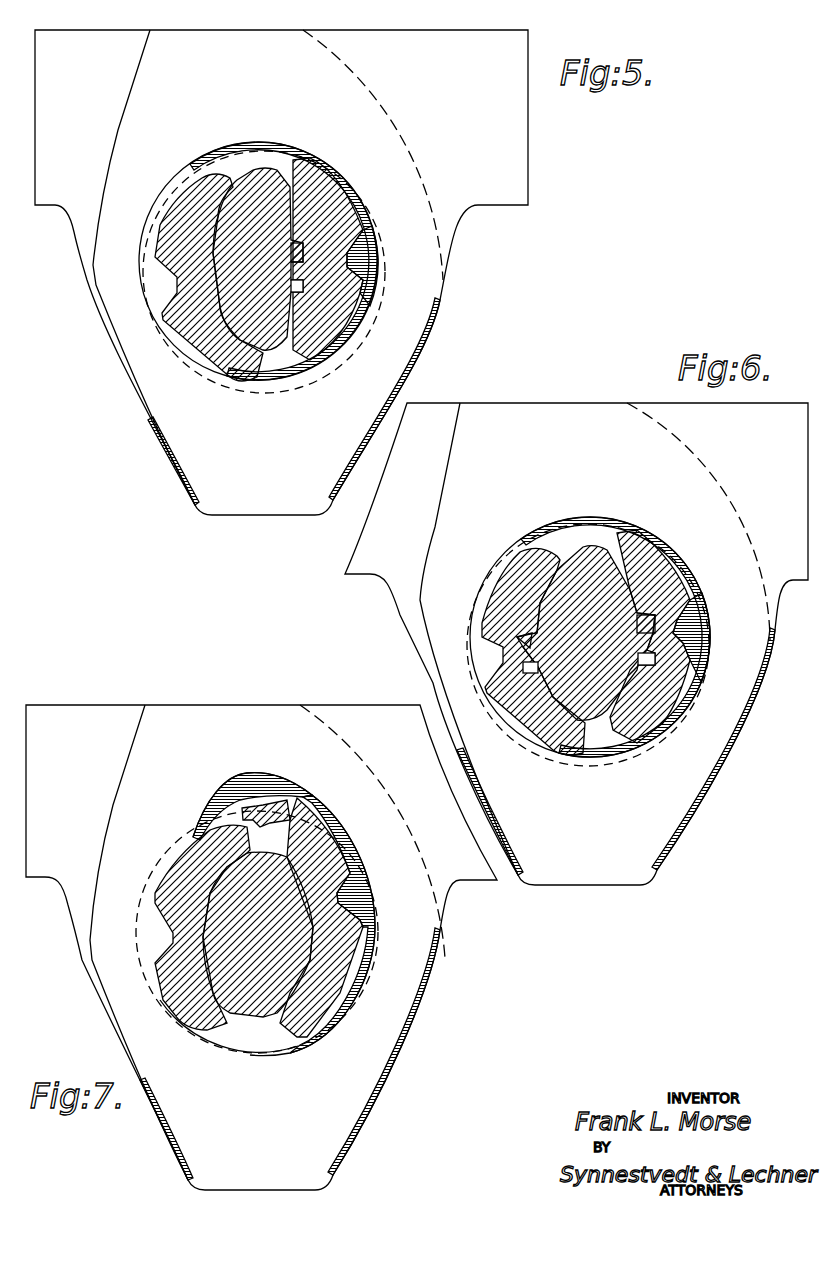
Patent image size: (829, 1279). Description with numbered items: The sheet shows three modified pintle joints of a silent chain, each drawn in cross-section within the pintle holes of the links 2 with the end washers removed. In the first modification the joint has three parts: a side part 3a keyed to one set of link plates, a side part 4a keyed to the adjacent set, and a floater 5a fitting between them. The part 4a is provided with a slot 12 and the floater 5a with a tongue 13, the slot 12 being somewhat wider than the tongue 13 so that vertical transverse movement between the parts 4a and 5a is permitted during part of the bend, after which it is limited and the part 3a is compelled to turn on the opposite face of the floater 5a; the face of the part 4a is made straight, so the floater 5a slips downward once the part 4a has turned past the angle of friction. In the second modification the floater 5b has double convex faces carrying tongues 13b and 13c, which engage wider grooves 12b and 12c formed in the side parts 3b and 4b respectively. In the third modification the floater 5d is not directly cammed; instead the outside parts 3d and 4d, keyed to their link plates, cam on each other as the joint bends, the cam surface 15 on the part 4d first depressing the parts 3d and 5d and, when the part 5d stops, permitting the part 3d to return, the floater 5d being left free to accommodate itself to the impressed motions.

In FIG. 5, the link 2 is at (281, 272).
In FIG. 6, the link 2 is at (576, 644).
In FIG. 7, the link 2 is at (261, 947).
In FIG. 5, the pintle part 3a is at (200, 185).
In FIG. 5, the pintle part 4a is at (335, 190).
In FIG. 5, the floater 5a is at (265, 180).
In FIG. 5, the slot 12 is at (300, 286).
In FIG. 5, the tongue 13 is at (300, 252).
In FIG. 6, the pintle part 3b is at (508, 575).
In FIG. 6, the pintle part 4b is at (650, 550).
In FIG. 6, the floater 5b is at (583, 550).
In FIG. 6, the groove 12b is at (525, 665).
In FIG. 6, the tongue 13b is at (527, 642).
In FIG. 6, the groove 12c is at (650, 660).
In FIG. 6, the tongue 13c is at (653, 632).
In FIG. 7, the pintle part 3d is at (185, 982).
In FIG. 7, the pintle part 4d is at (325, 857).
In FIG. 7, the floater 5d is at (230, 882).
In FIG. 7, the cam surface 15 is at (252, 810).